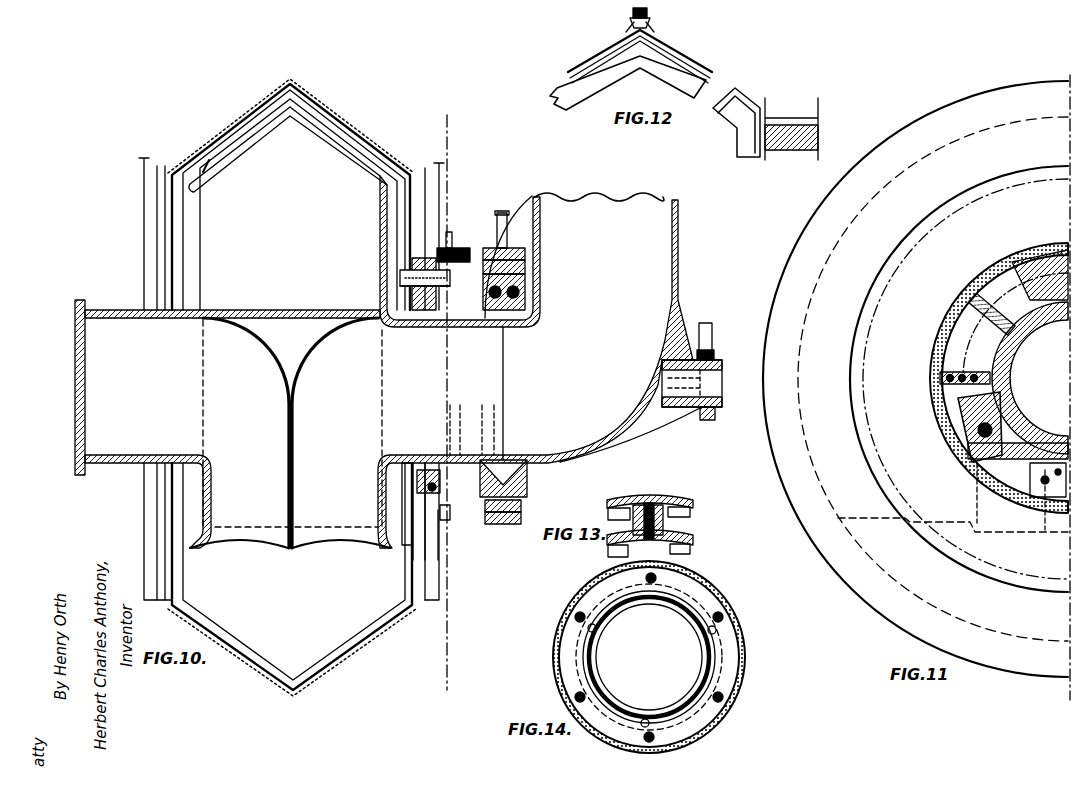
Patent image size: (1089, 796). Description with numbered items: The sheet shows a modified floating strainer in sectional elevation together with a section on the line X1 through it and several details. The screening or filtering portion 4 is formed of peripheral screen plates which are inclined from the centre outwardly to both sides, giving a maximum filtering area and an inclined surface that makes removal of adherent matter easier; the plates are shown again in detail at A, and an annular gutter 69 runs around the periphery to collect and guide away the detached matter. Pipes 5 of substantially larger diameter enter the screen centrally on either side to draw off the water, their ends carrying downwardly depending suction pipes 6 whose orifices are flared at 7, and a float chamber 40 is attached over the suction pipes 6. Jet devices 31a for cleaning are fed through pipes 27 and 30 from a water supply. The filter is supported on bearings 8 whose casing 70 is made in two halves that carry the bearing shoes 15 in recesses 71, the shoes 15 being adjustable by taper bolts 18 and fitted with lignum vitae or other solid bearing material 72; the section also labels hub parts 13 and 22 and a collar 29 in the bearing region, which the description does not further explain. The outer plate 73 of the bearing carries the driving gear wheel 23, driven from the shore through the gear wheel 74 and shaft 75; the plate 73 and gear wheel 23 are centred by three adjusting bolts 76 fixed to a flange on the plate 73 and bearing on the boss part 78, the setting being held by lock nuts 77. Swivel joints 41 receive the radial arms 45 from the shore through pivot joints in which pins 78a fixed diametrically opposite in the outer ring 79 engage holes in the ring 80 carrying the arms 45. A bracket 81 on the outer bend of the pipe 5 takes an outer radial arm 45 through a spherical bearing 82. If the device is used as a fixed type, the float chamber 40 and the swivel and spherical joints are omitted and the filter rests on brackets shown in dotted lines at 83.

In FIG. 10, the screening or filtering portion 4 is at (364, 672).
In FIG. 12, the screening or filtering portion 4 is at (672, 42).
In FIG. 10, the pipe 5 is at (599, 223).
In FIG. 10, the suction pipe 6 is at (387, 374).
In FIG. 11, the suction pipe 6 is at (953, 534).
In FIG. 10, the flared orifice 7 is at (234, 540).
In FIG. 11, the flared orifice 7 is at (1016, 536).
In FIG. 10, the bearing 8 is at (404, 285).
In FIG. 11, the hub 13 is at (1010, 394).
In FIG. 11, the bearing shoe 15 is at (1020, 295).
In FIG. 10, the taper bolt 18 is at (400, 273).
In FIG. 11, the taper bolt 18 is at (1052, 250).
In FIG. 14, the taper bolt 18 is at (632, 613).
In FIG. 11, the web 22 is at (1030, 410).
In FIG. 11, the driving gear wheel 23 is at (938, 374).
In FIG. 14, the driving gear wheel 23 is at (746, 690).
In FIG. 10, the pipe 27 is at (526, 185).
In FIG. 10, the collar 29 is at (447, 520).
In FIG. 10, the pipe 30 is at (380, 216).
In FIG. 10, the jet device 31a is at (205, 150).
In FIG. 10, the float chamber 40 is at (291, 387).
In FIG. 11, the float chamber 40 is at (866, 306).
In FIG. 10, the swivel joint 41 is at (527, 472).
In FIG. 10, the radial arm 45 is at (503, 212).
In FIG. 10, the annular gutter 69 is at (157, 156).
In FIG. 12, the annular gutter 69 is at (793, 125).
In FIG. 11, the casing 70 is at (1002, 370).
In FIG. 11, the recess 71 is at (1002, 470).
In FIG. 10, the solid bearing material 72 is at (442, 326).
In FIG. 10, the outer plate 73 is at (460, 508).
In FIG. 14, the outer plate 73 is at (733, 662).
In FIG. 10, the gear wheel 74 is at (463, 248).
In FIG. 10, the shaft 75 is at (450, 232).
In FIG. 10, the adjusting bolt 76 is at (436, 486).
In FIG. 11, the adjusting bolt 76 is at (1048, 496).
In FIG. 14, the adjusting bolt 76 is at (590, 623).
In FIG. 10, the lock nut 77 is at (414, 498).
In FIG. 14, the lock nut 77 is at (600, 640).
In FIG. 10, the boss part 78 is at (402, 481).
In FIG. 13, the pin 78a is at (694, 520).
In FIG. 10, the outer ring 79 is at (526, 263).
In FIG. 13, the outer ring 79 is at (694, 545).
In FIG. 10, the ring 80 is at (512, 250).
In FIG. 13, the ring 80 is at (676, 498).
In FIG. 10, the bracket 81 is at (683, 408).
In FIG. 10, the spherical bearing 82 is at (710, 421).
In FIG. 10, the bracket 83 is at (496, 418).
In FIG. 12, the plate A is at (610, 43).
In FIG. 10, the section line X1 is at (447, 400).